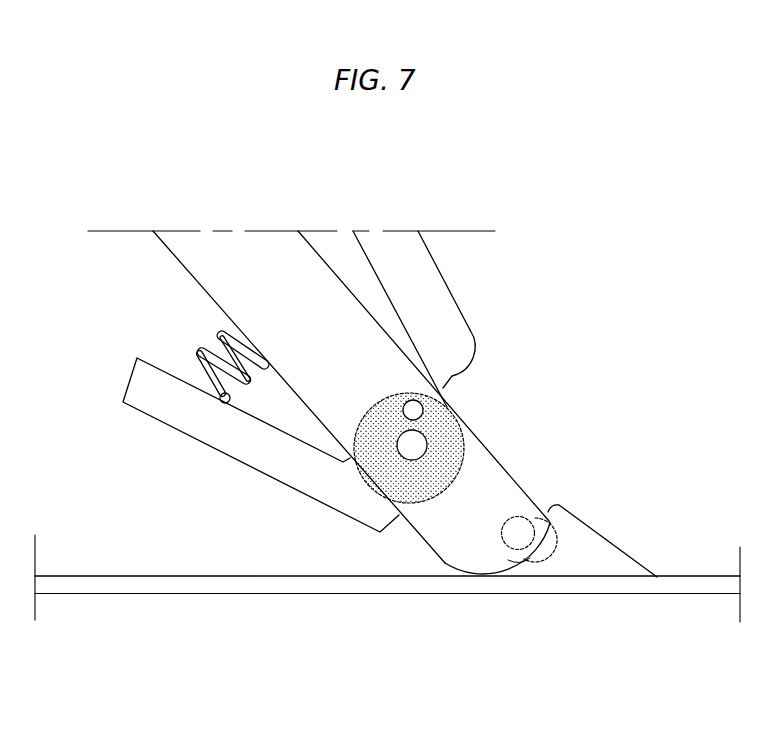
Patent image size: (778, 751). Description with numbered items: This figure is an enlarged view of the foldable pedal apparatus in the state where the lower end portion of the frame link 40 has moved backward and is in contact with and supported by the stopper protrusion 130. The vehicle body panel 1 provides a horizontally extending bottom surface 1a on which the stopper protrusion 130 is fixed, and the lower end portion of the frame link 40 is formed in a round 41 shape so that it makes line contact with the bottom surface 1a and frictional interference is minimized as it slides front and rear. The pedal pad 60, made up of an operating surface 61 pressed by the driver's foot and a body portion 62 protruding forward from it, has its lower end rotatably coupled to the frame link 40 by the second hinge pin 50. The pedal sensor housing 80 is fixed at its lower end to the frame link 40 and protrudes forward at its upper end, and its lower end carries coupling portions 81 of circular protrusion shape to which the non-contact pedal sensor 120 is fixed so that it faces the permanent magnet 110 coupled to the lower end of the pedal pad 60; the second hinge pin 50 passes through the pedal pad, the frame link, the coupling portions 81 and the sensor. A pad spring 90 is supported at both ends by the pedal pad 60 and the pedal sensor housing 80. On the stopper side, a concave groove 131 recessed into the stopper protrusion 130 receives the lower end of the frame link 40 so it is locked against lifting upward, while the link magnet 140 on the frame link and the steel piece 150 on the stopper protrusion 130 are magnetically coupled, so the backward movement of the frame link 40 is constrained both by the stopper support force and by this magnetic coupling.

The vehicle body panel 1 is at (133, 604).
The bottom surface 1a is at (277, 585).
The frame link 40 is at (260, 258).
The round 41 is at (447, 570).
The second hinge pin 50 is at (481, 516).
The pedal pad 60 is at (432, 272).
The operating surface 61 is at (397, 250).
The body portion 62 is at (342, 252).
The pedal sensor housing 80 is at (134, 387).
The coupling portions 81 is at (401, 391).
The pad spring 90 is at (197, 351).
The permanent magnet 110 is at (416, 412).
The non-contact pedal sensor 120 is at (443, 440).
The stopper protrusion 130 is at (560, 547).
The concave groove 131 is at (533, 512).
The link magnet 140 is at (520, 558).
The steel piece 150 is at (590, 556).